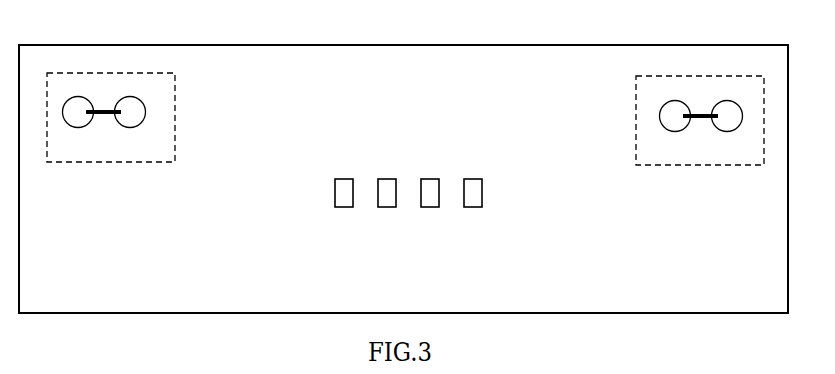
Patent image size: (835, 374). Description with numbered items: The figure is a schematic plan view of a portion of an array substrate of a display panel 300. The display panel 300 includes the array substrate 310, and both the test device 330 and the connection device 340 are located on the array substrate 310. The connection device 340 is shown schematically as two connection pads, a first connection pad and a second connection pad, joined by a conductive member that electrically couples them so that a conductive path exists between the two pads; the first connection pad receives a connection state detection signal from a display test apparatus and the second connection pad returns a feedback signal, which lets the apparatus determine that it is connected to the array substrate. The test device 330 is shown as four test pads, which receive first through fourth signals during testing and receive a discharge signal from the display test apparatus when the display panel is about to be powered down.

The display panel 300 is at (403, 163).
The array substrate 310 is at (402, 66).
The test device 330 is at (473, 207).
The connection device 340 is at (175, 100).